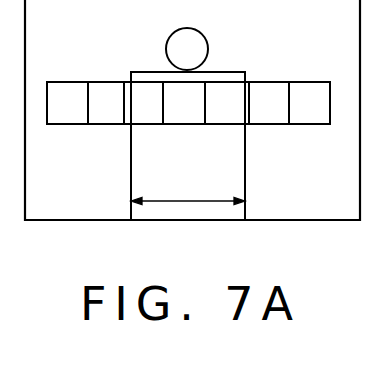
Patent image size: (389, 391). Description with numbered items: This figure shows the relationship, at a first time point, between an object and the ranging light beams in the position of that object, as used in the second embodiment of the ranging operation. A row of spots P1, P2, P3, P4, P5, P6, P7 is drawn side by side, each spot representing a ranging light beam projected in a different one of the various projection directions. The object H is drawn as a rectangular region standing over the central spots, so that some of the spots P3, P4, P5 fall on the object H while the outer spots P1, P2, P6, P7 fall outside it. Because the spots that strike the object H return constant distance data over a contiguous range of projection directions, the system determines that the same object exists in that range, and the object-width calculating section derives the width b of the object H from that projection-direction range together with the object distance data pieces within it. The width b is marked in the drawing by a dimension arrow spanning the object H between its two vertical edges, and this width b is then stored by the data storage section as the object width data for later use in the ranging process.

The spot of ranging light beam P1 is at (59, 87).
The spot of ranging light beam P2 is at (100, 85).
The spot of ranging light beam P3 is at (143, 83).
The spot of ranging light beam P4 is at (200, 86).
The spot of ranging light beam P5 is at (235, 86).
The spot of ranging light beam P6 is at (274, 82).
The spot of ranging light beam P7 is at (317, 80).
The object H is at (230, 160).
The width of the object b is at (188, 187).